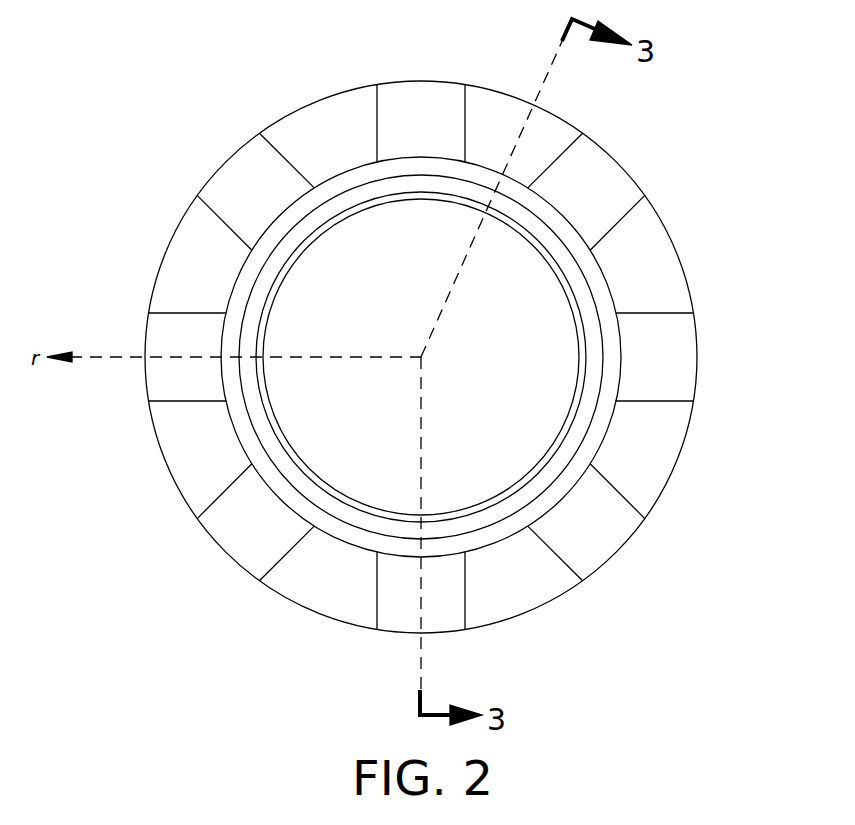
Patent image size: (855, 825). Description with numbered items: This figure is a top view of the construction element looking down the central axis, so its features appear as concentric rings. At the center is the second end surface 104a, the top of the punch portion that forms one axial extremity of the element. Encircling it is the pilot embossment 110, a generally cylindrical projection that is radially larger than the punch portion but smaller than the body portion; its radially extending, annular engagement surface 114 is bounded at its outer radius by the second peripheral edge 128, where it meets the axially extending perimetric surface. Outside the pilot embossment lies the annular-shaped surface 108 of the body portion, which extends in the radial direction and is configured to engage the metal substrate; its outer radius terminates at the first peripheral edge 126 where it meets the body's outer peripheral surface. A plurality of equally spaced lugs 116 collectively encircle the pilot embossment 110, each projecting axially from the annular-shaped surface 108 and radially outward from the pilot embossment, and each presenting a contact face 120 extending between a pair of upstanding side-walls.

The annular-shaped surface 108 is at (665, 265).
The pilot embossment 110 is at (268, 203).
The second end surface 104a is at (428, 185).
The engagement surface 114 is at (420, 165).
The second peripheral edge 128 is at (578, 222).
The first peripheral edge 126 is at (173, 483).
The contact face 120 is at (391, 592).
The lugs 116 is at (500, 609).